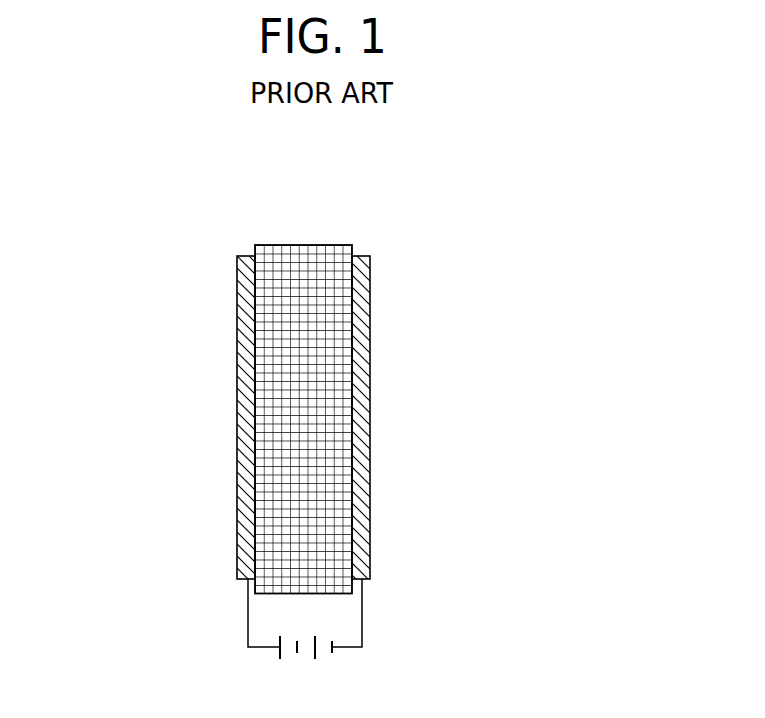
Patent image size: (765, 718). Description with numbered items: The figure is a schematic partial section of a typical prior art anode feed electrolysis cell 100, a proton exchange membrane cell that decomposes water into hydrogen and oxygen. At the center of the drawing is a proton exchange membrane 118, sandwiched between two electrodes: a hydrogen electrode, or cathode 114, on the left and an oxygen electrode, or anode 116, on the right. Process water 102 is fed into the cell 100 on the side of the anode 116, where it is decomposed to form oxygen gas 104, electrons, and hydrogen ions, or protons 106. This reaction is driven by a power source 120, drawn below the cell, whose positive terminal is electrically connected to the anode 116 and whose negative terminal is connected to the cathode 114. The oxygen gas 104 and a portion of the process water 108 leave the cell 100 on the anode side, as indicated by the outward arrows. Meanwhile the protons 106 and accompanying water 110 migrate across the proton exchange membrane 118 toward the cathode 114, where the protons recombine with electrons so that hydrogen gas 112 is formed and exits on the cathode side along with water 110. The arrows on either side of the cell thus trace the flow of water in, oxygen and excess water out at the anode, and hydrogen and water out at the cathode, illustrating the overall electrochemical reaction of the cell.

The anode feed electrolysis cell 100 is at (345, 386).
The process water 102 is at (503, 518).
The oxygen gas 104 is at (445, 332).
The hydrogen ions (protons) 106 is at (331, 434).
The portion of the process water 108 is at (532, 332).
The water 110 is at (299, 467).
The hydrogen gas 112 is at (192, 407).
The hydrogen electrode (cathode) 114 is at (250, 256).
The oxygen electrode (anode) 116 is at (365, 256).
The proton exchange membrane 118 is at (300, 245).
The power source 120 is at (374, 610).